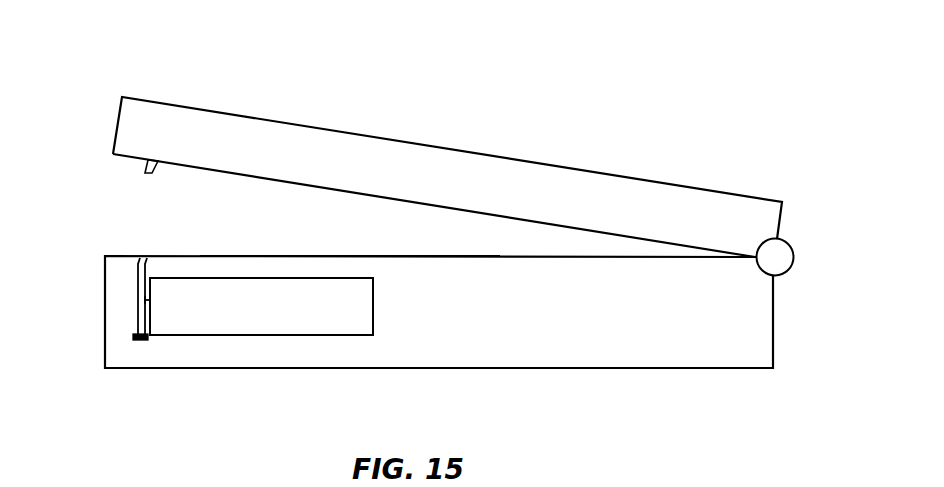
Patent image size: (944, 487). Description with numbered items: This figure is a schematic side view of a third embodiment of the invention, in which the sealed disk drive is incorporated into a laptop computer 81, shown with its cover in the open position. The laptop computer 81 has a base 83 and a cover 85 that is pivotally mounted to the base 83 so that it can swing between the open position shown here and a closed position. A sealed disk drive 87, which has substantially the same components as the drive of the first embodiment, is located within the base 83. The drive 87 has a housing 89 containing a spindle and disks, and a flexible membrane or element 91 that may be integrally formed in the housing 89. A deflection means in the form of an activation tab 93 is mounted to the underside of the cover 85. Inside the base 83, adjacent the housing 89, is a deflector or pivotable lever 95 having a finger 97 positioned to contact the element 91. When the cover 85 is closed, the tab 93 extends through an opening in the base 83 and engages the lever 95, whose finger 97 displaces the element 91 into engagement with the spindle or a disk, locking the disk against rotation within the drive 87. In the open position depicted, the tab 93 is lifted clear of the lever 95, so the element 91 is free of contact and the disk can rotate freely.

The laptop computer 81 is at (598, 99).
The base 83 is at (760, 323).
The cover 85 is at (648, 190).
The sealed disk drive 87 is at (248, 267).
The housing 89 is at (315, 298).
The flexible membrane or element 91 is at (148, 300).
The activation tab 93 is at (145, 172).
The pivotable lever 95 is at (137, 285).
The finger 97 is at (150, 300).